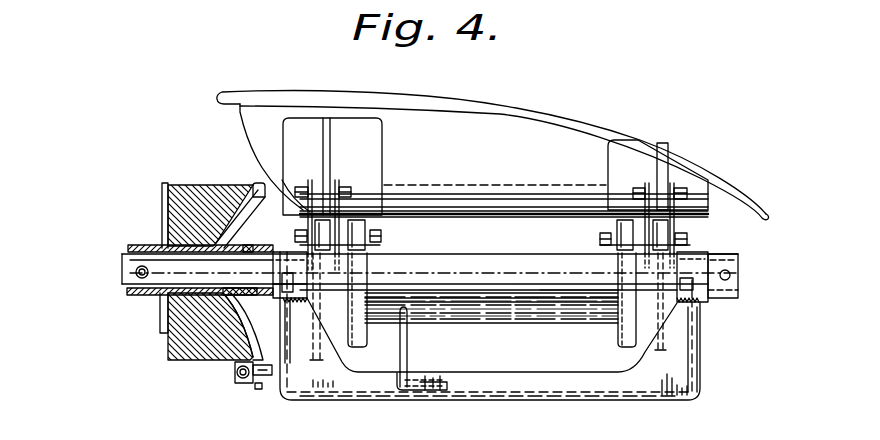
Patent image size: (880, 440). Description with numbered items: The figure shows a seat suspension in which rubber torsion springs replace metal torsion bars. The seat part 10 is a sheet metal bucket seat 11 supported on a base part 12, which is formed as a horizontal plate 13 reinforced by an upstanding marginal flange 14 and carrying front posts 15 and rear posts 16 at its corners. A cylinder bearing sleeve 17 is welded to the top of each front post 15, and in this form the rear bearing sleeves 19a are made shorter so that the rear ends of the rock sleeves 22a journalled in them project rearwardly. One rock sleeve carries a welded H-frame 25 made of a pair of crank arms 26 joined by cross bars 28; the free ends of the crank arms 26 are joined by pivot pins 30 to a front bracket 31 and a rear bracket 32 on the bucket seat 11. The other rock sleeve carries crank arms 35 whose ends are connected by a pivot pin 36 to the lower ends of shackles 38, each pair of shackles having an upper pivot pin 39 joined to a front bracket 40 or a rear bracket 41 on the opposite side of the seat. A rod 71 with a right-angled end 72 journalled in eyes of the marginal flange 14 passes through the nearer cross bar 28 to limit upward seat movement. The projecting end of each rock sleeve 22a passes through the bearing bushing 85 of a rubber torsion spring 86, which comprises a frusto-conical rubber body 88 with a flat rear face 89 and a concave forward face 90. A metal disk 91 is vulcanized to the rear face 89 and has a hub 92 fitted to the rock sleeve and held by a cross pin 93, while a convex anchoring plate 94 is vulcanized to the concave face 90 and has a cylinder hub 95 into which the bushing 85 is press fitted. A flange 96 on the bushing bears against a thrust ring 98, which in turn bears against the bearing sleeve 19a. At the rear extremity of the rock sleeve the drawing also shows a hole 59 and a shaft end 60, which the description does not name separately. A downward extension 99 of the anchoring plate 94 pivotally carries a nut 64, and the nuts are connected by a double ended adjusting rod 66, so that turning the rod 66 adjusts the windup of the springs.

The seat part 10 is at (577, 88).
The bucket seat 11 is at (483, 88).
The base part 12 is at (640, 406).
The horizontal plate 13 is at (528, 402).
The marginal flange 14 is at (538, 378).
The front posts 15 is at (700, 364).
The rear posts 16 is at (344, 363).
The cylinder bearing sleeve 17 is at (705, 251).
The rear bearing sleeves 19a is at (277, 263).
The rock sleeves 22a is at (535, 259).
The H-frame 25 is at (547, 328).
The crank arms 26 is at (361, 339).
The cross bars 28 is at (468, 322).
The pivot pins 30 is at (383, 244).
The front bracket 31 is at (607, 222).
The rear bracket 32 is at (381, 230).
The crank arms 35 is at (347, 359).
The pivot pin 36 is at (294, 235).
The shackles 38 is at (309, 182).
The upper pivot pin 39 is at (361, 166).
The front bracket 40 is at (651, 153).
The rear bracket 41 is at (381, 159).
The pin hole 59 is at (731, 275).
The shaft end 60 is at (740, 297).
The nut 64 is at (247, 385).
The adjusting rod 66 is at (236, 374).
The rod 71 is at (408, 347).
The rod end 72 is at (415, 388).
The bearing bushing 85 is at (230, 254).
The rubber torsion spring 86 is at (166, 173).
The rubber body 88 is at (185, 361).
The flat rear face 89 is at (160, 322).
The concave forward face 90 is at (249, 216).
The metal disk 91 is at (162, 218).
The hub 92 is at (133, 294).
The cross pin 93 is at (135, 272).
The anchoring plate 94 is at (261, 182).
The cylinder hub 95 is at (236, 302).
The flange 96 is at (252, 245).
The thrust ring 98 is at (288, 306).
The downward extension 99 is at (259, 390).